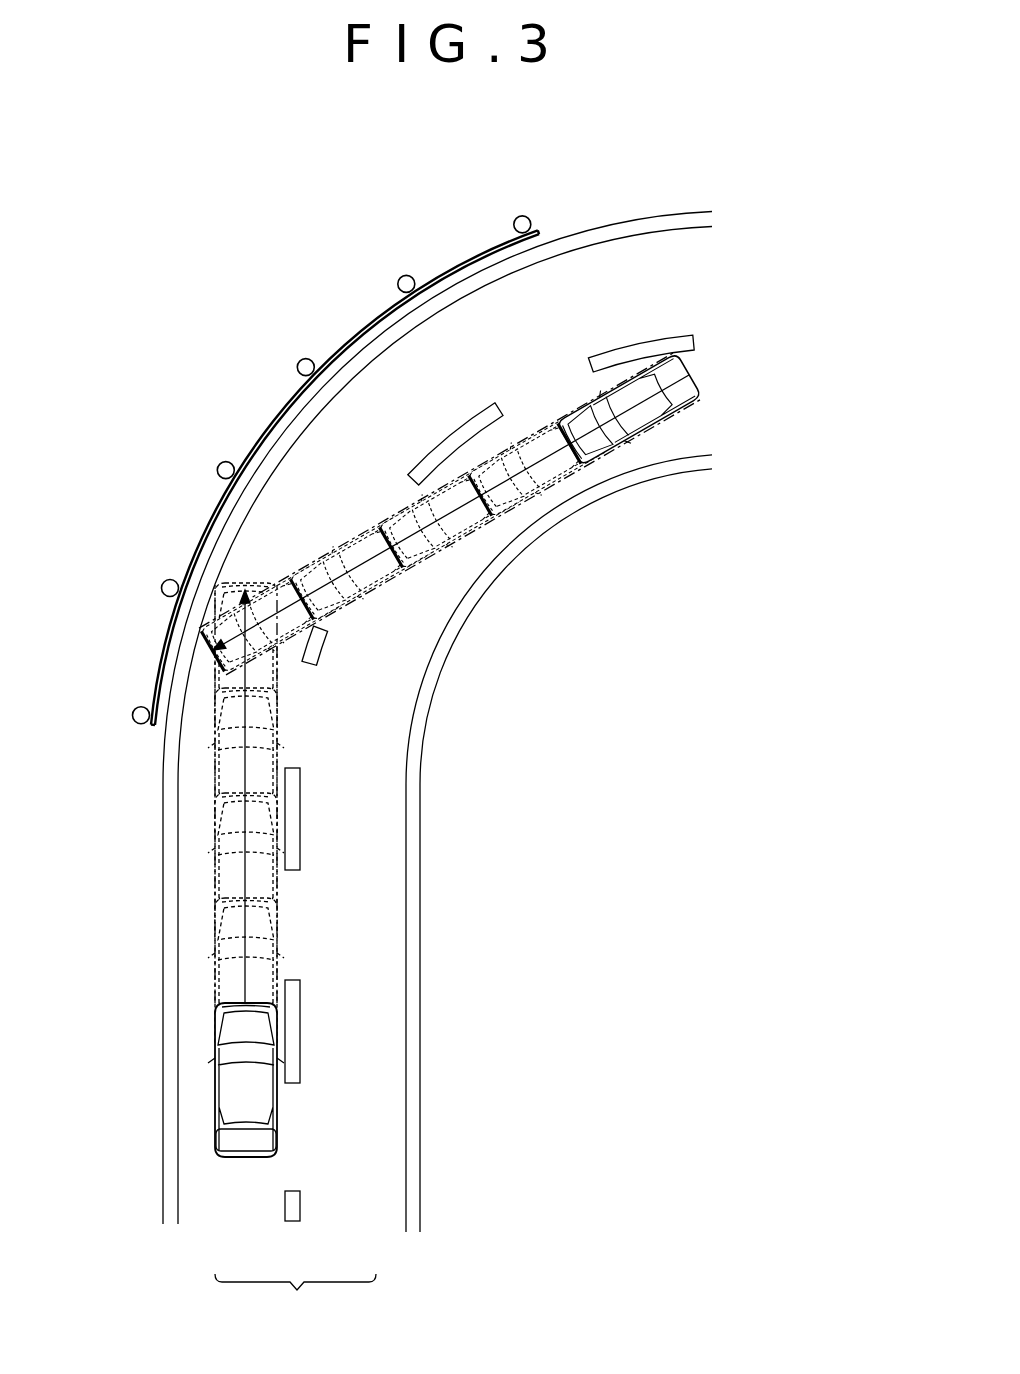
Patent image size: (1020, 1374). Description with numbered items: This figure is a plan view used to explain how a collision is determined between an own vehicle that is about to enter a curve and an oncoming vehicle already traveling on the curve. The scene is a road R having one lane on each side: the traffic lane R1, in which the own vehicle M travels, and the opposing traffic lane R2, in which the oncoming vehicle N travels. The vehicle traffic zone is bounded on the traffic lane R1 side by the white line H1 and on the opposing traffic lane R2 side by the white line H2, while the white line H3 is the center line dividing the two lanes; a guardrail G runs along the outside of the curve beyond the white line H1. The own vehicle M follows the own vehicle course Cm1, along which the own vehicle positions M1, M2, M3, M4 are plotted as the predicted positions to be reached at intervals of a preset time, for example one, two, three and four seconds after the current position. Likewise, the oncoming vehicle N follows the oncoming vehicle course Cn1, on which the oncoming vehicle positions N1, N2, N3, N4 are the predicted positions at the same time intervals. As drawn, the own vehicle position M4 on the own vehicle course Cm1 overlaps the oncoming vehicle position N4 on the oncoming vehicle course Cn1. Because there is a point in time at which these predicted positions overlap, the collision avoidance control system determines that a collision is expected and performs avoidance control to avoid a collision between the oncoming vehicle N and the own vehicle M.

The guardrail G is at (502, 243).
The oncoming vehicle N is at (690, 373).
The oncoming vehicle position N1 is at (567, 487).
The oncoming vehicle position N2 is at (474, 533).
The oncoming vehicle position N3 is at (387, 580).
The oncoming vehicle position N4 is at (283, 657).
The oncoming vehicle course Cn1 is at (312, 566).
The own vehicle M is at (215, 1080).
The own vehicle position M1 is at (214, 985).
The own vehicle position M2 is at (214, 884).
The own vehicle position M3 is at (214, 778).
The own vehicle position M4 is at (210, 608).
The own vehicle course Cm1 is at (278, 742).
The white line H1 is at (163, 1165).
The white line H2 is at (423, 1136).
The white line H3 is at (301, 1025).
The road R is at (295, 1301).
The traffic lane R1 is at (238, 1198).
The opposing traffic lane R2 is at (357, 1198).